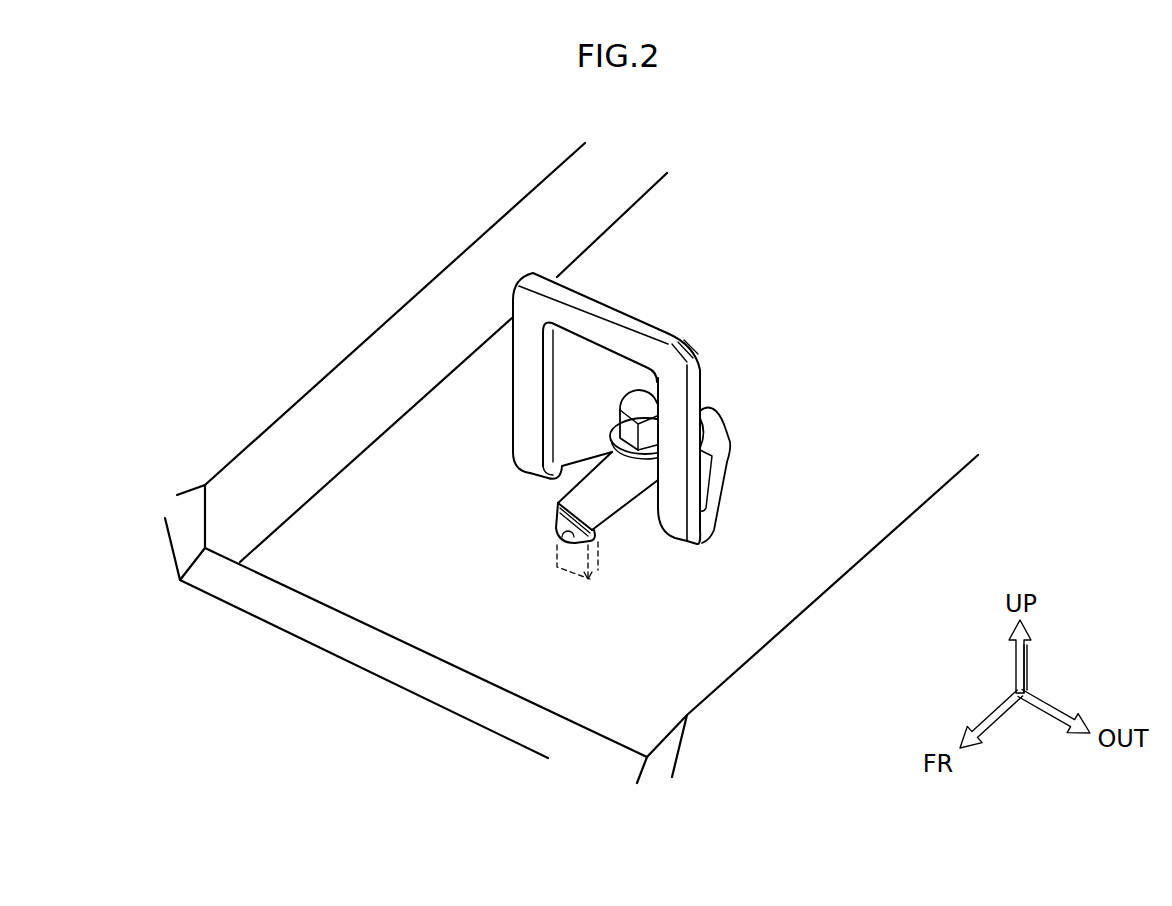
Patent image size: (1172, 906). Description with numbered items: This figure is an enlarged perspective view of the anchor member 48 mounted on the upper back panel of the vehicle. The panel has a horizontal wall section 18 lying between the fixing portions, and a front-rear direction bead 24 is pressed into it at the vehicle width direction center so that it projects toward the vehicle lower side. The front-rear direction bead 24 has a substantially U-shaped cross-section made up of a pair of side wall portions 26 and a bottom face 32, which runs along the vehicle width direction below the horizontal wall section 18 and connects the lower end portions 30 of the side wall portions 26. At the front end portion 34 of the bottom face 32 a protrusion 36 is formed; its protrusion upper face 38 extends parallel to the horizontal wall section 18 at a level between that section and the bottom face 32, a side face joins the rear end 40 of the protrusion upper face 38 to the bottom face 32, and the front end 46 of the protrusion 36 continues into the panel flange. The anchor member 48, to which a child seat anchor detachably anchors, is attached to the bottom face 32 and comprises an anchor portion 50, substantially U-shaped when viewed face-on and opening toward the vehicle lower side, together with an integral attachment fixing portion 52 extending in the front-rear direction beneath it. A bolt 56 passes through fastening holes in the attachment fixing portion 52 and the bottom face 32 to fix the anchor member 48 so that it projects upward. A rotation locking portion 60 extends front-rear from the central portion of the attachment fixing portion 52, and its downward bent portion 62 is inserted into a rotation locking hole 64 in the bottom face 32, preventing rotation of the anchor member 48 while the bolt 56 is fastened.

The horizontal wall section 18 is at (243, 373).
The front-rear direction bead 24 is at (690, 373).
The side wall portions 26 is at (592, 209).
The lower end portions 30 is at (389, 426).
The bottom face 32 is at (798, 367).
The front end portion 34 is at (354, 592).
The protrusion 36 is at (438, 673).
The protrusion upper face 38 is at (414, 653).
The rear end 40 is at (377, 625).
The front end 46 is at (288, 637).
The anchor member 48 is at (658, 415).
The anchor portion 50 is at (643, 323).
The attachment fixing portion 52 is at (708, 463).
The bolt 56 is at (620, 398).
The rotation locking portion 60 is at (579, 527).
The bent portion 62 is at (555, 530).
The rotation locking hole 64 is at (558, 568).